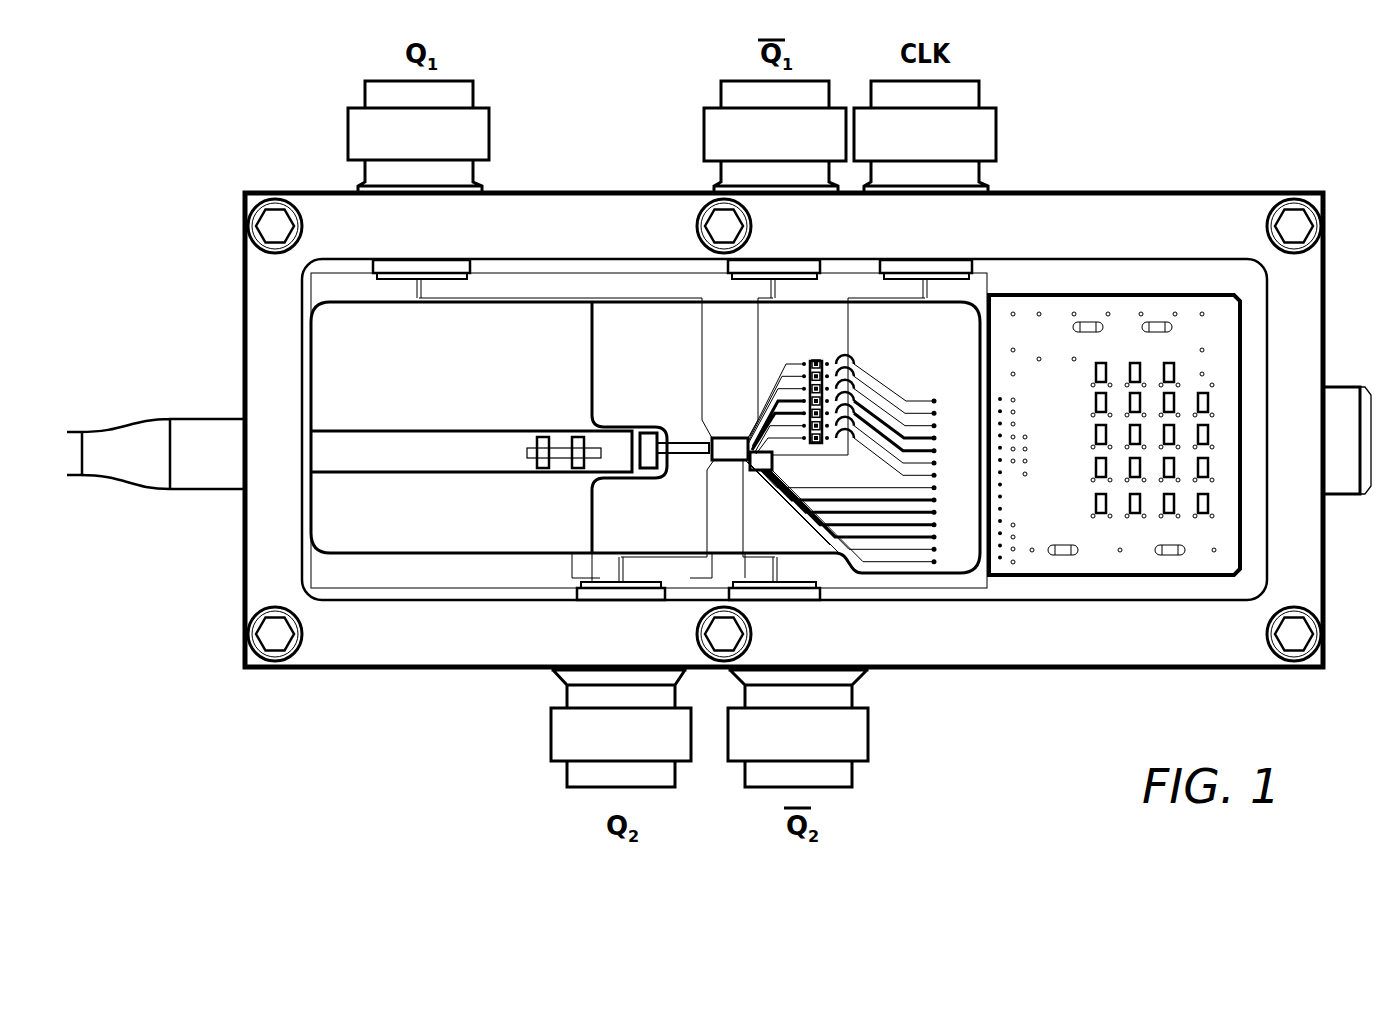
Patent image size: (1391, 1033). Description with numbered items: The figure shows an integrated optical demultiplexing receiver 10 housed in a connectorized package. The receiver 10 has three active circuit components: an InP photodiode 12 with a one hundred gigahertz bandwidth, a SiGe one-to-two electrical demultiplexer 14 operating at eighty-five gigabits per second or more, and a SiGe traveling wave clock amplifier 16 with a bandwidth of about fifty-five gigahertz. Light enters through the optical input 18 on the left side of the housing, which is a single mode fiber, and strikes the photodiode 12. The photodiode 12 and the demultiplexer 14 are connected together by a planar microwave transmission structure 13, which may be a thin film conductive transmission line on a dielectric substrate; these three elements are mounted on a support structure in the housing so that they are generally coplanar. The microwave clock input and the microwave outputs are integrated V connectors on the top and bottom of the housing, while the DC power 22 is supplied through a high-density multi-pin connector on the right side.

The integrated optical demultiplexing receiver 10 is at (298, 166).
The InP photodiode 12 is at (682, 440).
The planar microwave transmission structure 13 is at (708, 455).
The electrical demultiplexer 14 is at (727, 445).
The traveling wave clock amplifier 16 is at (761, 466).
The optical input 18 is at (118, 421).
The DC power 22 is at (1352, 387).